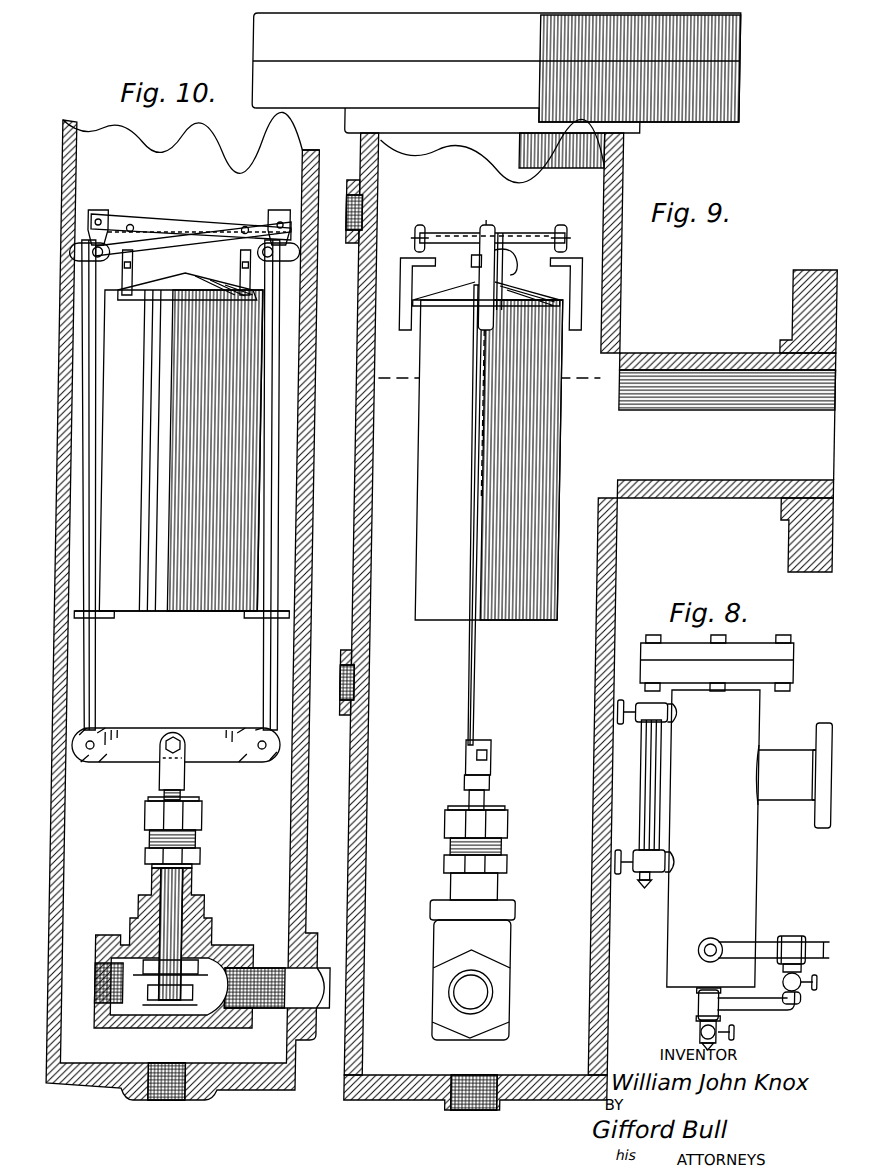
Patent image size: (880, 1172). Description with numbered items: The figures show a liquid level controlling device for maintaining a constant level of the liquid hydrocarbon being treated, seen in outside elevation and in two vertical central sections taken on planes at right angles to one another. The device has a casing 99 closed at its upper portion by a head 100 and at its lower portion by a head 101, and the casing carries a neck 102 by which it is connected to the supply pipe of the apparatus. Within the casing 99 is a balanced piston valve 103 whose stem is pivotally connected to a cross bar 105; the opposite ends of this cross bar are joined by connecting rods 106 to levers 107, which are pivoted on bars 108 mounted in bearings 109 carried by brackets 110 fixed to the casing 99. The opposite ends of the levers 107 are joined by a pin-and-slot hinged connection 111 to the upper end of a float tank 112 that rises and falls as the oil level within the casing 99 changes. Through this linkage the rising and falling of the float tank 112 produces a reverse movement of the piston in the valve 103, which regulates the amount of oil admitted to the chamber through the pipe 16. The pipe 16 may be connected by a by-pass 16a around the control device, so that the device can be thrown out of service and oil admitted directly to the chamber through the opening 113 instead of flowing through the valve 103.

In FIG. 10, the pipe 16 is at (345, 1010).
In FIG. 8, the pipe 16 is at (779, 942).
In FIG. 8, the by-pass 16a is at (788, 1015).
In FIG. 9, the casing 99 is at (629, 325).
In FIG. 8, the casing 99 is at (779, 838).
In FIG. 9, the head 100 is at (272, 28).
In FIG. 8, the head 100 is at (815, 645).
In FIG. 10, the head 101 is at (258, 1085).
In FIG. 9, the head 101 is at (421, 1090).
In FIG. 9, the neck 102 is at (714, 493).
In FIG. 8, the neck 102 is at (802, 750).
In FIG. 10, the balanced piston valve 103 is at (223, 935).
In FIG. 9, the balanced piston valve 103 is at (514, 958).
In FIG. 10, the cross bar 105 is at (220, 750).
In FIG. 9, the cross bar 105 is at (513, 760).
In FIG. 10, the connecting rods 106 is at (103, 665).
In FIG. 9, the connecting rods 106 is at (472, 680).
In FIG. 10, the levers 107 is at (168, 220).
In FIG. 9, the levers 107 is at (501, 230).
In FIG. 10, the bars 108 is at (134, 224).
In FIG. 9, the bars 108 is at (551, 226).
In FIG. 10, the bearings 109 is at (245, 257).
In FIG. 9, the bearings 109 is at (444, 206).
In FIG. 10, the brackets 110 is at (240, 283).
In FIG. 9, the brackets 110 is at (417, 280).
In FIG. 10, the pin-and-slot hinged connection 111 is at (112, 205).
In FIG. 9, the pin-and-slot hinged connection 111 is at (476, 261).
In FIG. 10, the float tank 112 is at (171, 597).
In FIG. 9, the float tank 112 is at (489, 420).
In FIG. 10, the opening 113 is at (203, 1100).
In FIG. 9, the opening 113 is at (497, 1110).